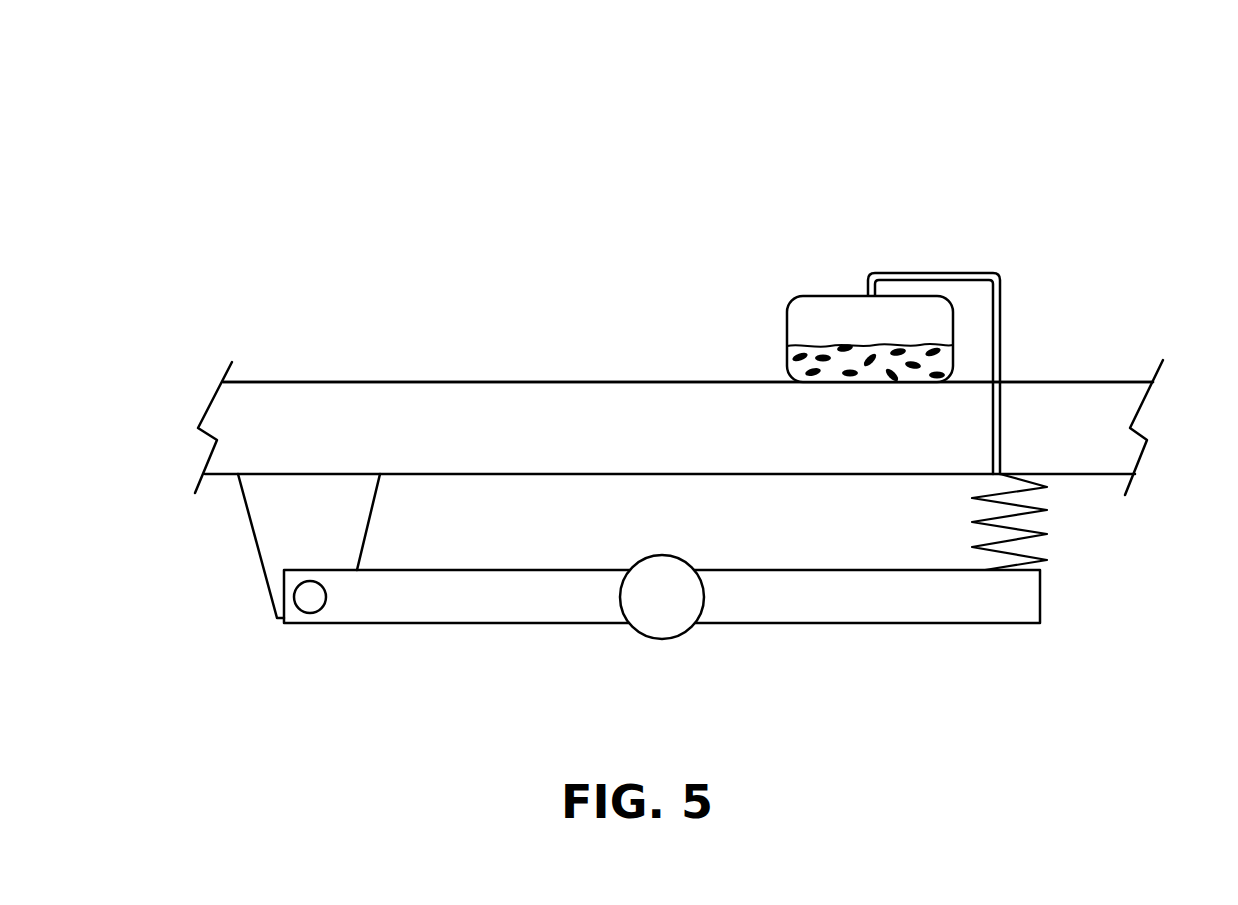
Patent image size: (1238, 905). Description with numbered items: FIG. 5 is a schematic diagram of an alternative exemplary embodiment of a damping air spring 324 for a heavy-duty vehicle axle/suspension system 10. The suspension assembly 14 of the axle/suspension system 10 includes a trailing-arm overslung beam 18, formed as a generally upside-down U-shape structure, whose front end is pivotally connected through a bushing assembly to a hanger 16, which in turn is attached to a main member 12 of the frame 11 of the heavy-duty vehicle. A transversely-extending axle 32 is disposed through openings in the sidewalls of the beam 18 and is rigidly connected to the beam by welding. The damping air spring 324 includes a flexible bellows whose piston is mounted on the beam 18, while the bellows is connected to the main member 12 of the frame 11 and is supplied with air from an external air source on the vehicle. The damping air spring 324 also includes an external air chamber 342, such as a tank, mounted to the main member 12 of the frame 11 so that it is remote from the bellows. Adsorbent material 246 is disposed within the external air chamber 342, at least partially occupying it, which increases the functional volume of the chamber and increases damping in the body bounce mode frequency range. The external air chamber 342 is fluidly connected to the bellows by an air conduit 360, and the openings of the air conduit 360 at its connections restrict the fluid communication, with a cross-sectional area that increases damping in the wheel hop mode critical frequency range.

The axle/suspension system 10 is at (708, 178).
The frame 11 is at (560, 375).
The main member 12 is at (629, 400).
The suspension assembly 14 is at (313, 638).
The hanger 16 is at (258, 545).
The trailing-arm overslung beam 18 is at (763, 623).
The axle 32 is at (635, 628).
The adsorbent material 246 is at (790, 360).
The damping air spring 324 is at (1062, 528).
The external air chamber 342 is at (831, 255).
The air conduit 360 is at (1003, 372).